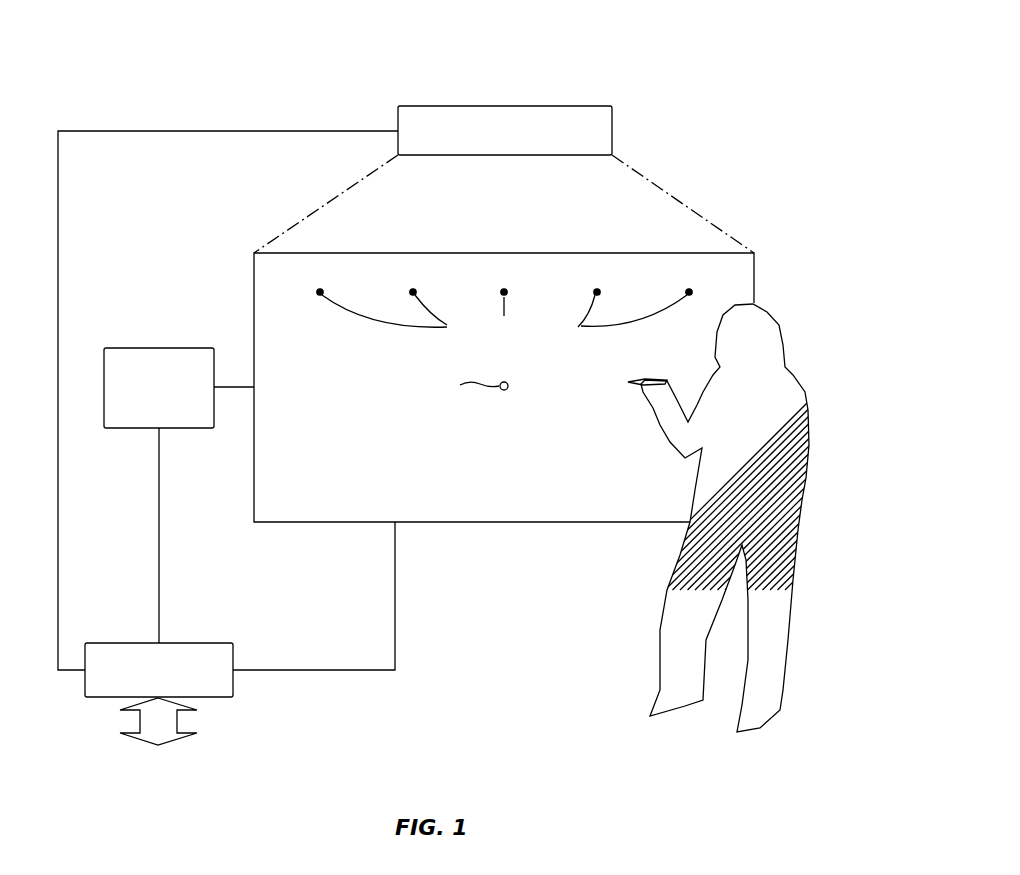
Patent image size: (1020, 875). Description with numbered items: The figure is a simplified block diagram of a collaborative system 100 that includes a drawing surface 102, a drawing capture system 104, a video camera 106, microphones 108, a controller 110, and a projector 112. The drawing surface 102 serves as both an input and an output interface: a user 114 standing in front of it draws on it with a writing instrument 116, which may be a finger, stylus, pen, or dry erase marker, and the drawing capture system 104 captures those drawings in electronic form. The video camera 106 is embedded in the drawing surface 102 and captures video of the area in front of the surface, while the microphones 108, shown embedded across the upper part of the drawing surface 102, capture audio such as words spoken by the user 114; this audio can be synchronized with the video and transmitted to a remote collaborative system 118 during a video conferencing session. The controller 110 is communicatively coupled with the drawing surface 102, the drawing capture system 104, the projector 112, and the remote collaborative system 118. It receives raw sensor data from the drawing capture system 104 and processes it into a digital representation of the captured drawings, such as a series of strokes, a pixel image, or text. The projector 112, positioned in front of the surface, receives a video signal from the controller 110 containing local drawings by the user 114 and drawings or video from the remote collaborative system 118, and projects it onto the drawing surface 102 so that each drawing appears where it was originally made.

The collaborative system 100 is at (590, 25).
The drawing surface 102 is at (504, 524).
The drawing capture system 104 is at (160, 346).
The video camera 106 is at (443, 431).
The microphones 108 is at (527, 360).
The controller 110 is at (193, 643).
The projector 112 is at (614, 132).
The user 114 is at (803, 500).
The writing instrument 116 is at (634, 392).
The remote collaborative system 118 is at (266, 757).